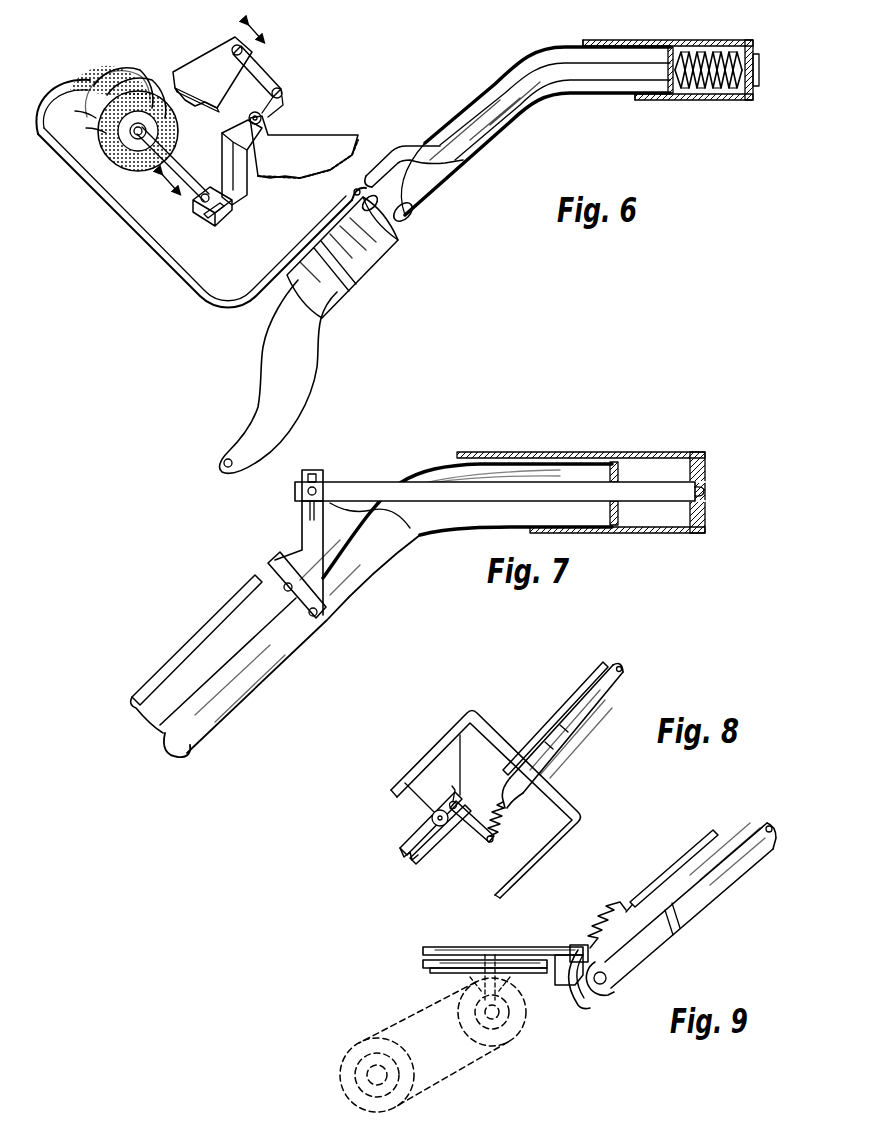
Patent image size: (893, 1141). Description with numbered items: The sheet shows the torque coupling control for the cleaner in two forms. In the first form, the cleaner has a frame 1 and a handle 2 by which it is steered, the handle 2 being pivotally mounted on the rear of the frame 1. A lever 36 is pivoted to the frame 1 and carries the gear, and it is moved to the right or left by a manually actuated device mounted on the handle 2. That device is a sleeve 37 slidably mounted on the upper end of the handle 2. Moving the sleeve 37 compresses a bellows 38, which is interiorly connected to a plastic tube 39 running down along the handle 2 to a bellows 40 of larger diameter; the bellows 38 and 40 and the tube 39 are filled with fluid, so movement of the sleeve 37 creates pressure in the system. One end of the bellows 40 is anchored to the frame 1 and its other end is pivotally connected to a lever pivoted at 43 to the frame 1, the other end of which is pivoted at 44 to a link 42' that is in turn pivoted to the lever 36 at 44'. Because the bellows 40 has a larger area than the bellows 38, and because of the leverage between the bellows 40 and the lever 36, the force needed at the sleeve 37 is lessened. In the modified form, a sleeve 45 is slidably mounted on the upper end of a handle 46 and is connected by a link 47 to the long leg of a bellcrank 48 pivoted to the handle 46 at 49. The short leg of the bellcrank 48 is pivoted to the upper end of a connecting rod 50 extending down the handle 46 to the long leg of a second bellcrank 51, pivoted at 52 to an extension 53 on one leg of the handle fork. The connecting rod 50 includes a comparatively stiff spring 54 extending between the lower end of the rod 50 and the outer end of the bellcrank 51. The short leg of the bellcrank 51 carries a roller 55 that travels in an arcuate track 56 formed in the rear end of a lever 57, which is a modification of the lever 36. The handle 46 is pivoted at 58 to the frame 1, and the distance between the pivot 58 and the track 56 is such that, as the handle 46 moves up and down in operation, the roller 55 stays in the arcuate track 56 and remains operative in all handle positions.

In FIG. 6, the frame 1 is at (310, 166).
In FIG. 6, the handle 2 is at (450, 183).
In FIG. 6, the lever 36 is at (222, 90).
In FIG. 6, the sleeve 37 is at (673, 42).
In FIG. 6, the bellows 38 is at (712, 46).
In FIG. 6, the plastic tube 39 is at (264, 283).
In FIG. 6, the bellows 40 is at (117, 66).
In FIG. 6, the link 42' is at (206, 183).
In FIG. 6, the pivot 43 is at (247, 116).
In FIG. 6, the pivot 44 is at (281, 81).
In FIG. 6, the pivot 44' is at (230, 25).
In FIG. 7, the sleeve 45 is at (600, 452).
In FIG. 7, the handle 46 is at (276, 662).
In FIG. 8, the handle 46 is at (598, 708).
In FIG. 9, the handle 46 is at (750, 845).
In FIG. 7, the link 47 is at (372, 482).
In FIG. 7, the bellcrank 48 is at (326, 580).
In FIG. 7, the pivot 49 is at (330, 610).
In FIG. 7, the connecting rod 50 is at (214, 612).
In FIG. 8, the connecting rod 50 is at (584, 695).
In FIG. 9, the connecting rod 50 is at (680, 864).
In FIG. 8, the second bellcrank 51 is at (486, 840).
In FIG. 8, the pivot 52 is at (456, 800).
In FIG. 8, the extension 53 is at (452, 782).
In FIG. 8, the spring 54 is at (510, 808).
In FIG. 9, the spring 54 is at (616, 914).
In FIG. 8, the roller 55 is at (430, 842).
In FIG. 9, the roller 55 is at (586, 946).
In FIG. 9, the arcuate track 56 is at (576, 998).
In FIG. 8, the lever 57 is at (414, 826).
In FIG. 9, the lever 57 is at (465, 946).
In FIG. 9, the pivot 58 is at (603, 998).